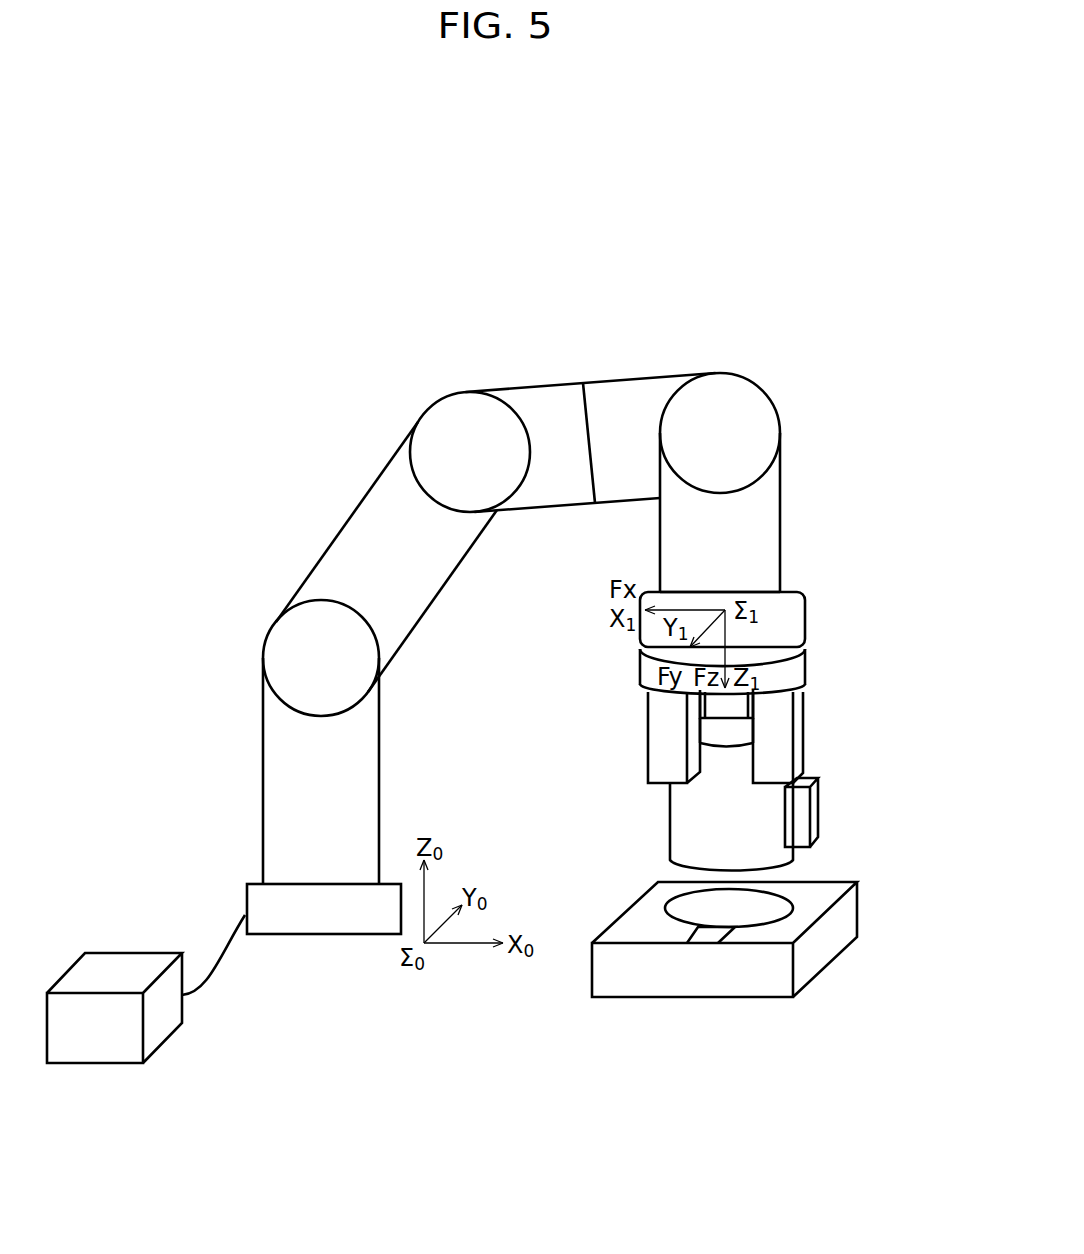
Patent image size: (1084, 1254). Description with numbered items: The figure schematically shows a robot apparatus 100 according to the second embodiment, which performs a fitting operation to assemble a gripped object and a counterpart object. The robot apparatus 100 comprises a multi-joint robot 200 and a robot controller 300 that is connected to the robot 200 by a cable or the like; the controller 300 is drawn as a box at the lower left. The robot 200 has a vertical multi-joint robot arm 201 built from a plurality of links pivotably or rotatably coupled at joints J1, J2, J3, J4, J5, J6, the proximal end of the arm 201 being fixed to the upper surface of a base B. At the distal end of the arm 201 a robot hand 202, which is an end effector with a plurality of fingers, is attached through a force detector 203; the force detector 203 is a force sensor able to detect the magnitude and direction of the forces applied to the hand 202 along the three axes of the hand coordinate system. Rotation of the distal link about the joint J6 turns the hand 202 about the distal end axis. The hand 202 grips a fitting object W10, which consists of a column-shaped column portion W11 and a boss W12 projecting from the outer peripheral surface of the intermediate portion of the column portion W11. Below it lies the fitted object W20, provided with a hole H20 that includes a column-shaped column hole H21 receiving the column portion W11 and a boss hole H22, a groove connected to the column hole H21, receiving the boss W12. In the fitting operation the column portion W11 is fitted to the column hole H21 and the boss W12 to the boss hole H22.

The robot apparatus 100 is at (608, 175).
The multi-joint robot 200 is at (240, 305).
The robot arm 201 is at (600, 381).
The robot hand 202 is at (802, 667).
The force detector 203 is at (793, 627).
The robot controller 300 is at (133, 960).
The joint J1 is at (313, 883).
The joint J2 is at (292, 655).
The joint J3 is at (455, 425).
The joint J4 is at (585, 450).
The joint J5 is at (735, 415).
The joint J6 is at (713, 590).
The base B is at (311, 972).
The fitting object W10 is at (887, 735).
The column portion W11 is at (730, 765).
The boss W12 is at (813, 813).
The fitted object W20 is at (840, 917).
The hole H20 is at (583, 845).
The column hole H21 is at (695, 902).
The boss hole H22 is at (707, 932).